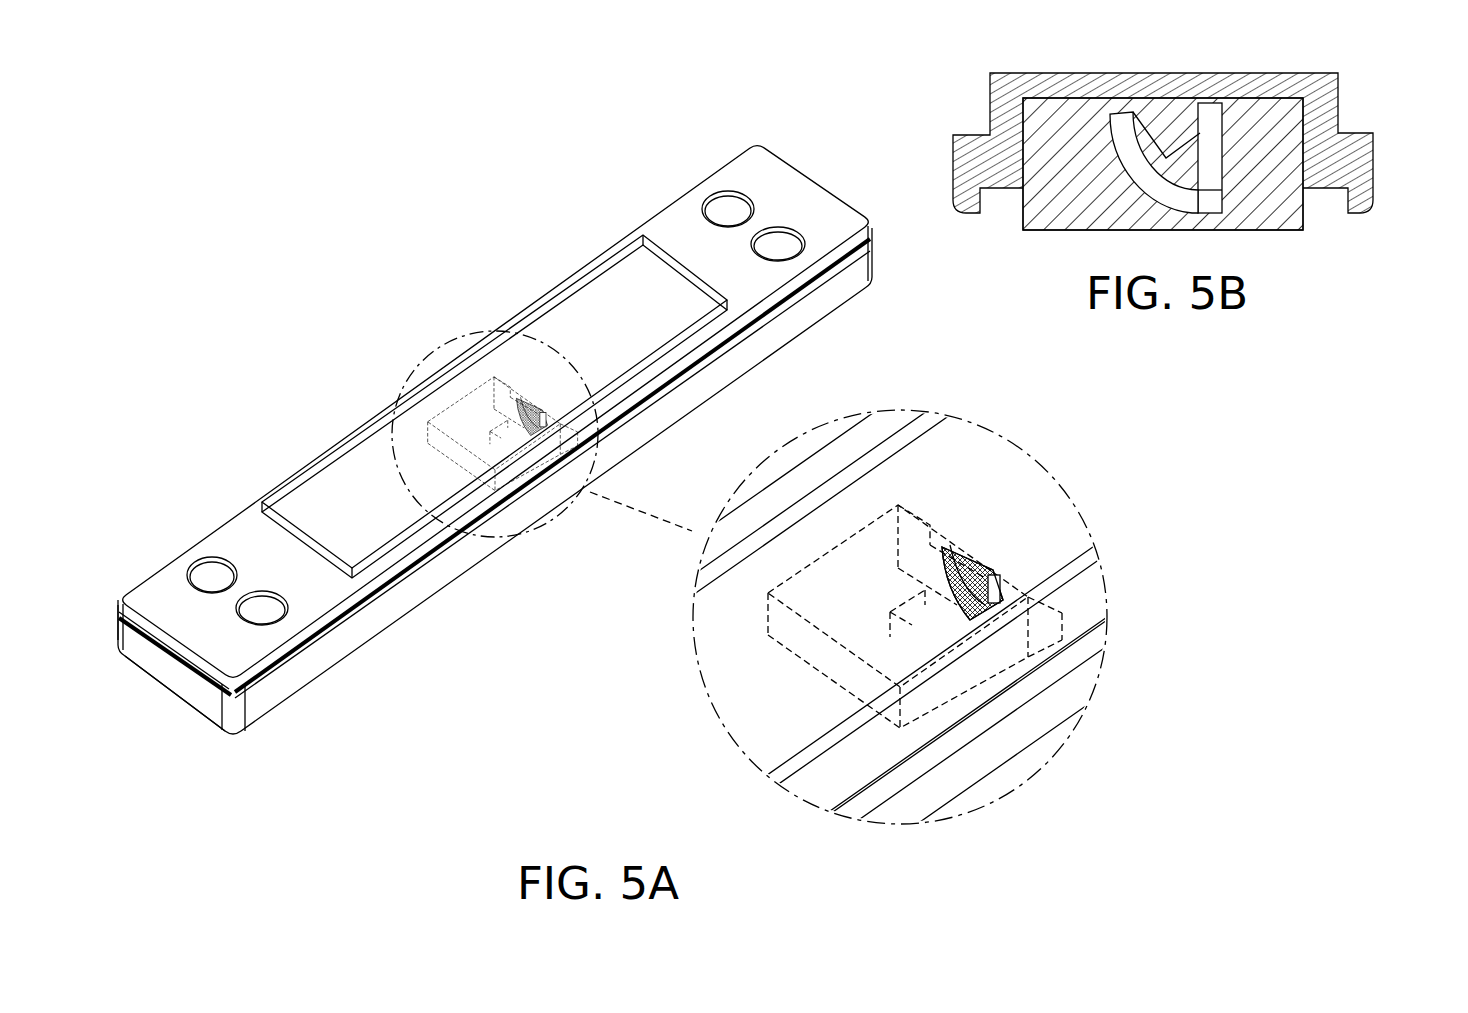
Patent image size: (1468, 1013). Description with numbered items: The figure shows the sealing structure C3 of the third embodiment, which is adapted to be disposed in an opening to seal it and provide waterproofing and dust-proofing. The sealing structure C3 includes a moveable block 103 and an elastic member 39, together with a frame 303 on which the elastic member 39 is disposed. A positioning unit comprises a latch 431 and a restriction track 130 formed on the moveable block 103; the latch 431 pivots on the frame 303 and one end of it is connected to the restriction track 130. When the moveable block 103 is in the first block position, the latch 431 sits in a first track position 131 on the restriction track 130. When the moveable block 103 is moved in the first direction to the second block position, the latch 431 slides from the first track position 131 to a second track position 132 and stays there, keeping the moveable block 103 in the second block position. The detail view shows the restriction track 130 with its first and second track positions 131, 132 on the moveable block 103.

In FIG. 5A, the elastic member 39 is at (118, 632).
In FIG. 5A, the frame 303 is at (200, 711).
In FIG. 5B, the moveable block 103 is at (1362, 76).
In FIG. 5A, the restriction track 130 is at (975, 597).
In FIG. 5B, the restriction track 130 is at (1222, 162).
In FIG. 5B, the first track position 131 is at (1208, 200).
In FIG. 5B, the second track position 132 is at (1166, 157).
In FIG. 5A, the latch 431 is at (985, 600).
In FIG. 5A, the sealing structure C3 is at (128, 173).